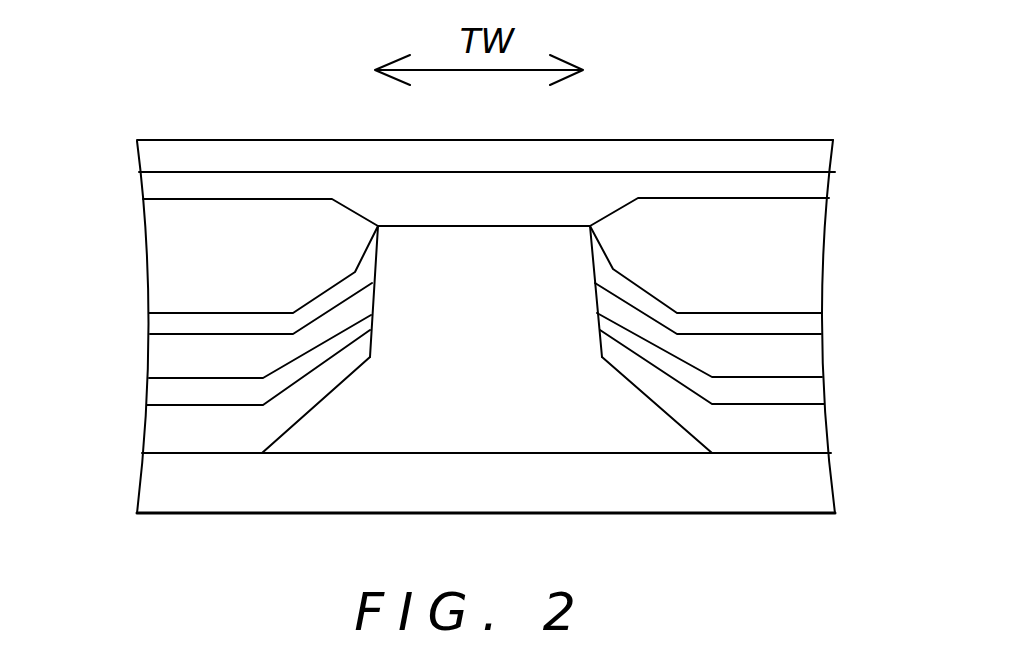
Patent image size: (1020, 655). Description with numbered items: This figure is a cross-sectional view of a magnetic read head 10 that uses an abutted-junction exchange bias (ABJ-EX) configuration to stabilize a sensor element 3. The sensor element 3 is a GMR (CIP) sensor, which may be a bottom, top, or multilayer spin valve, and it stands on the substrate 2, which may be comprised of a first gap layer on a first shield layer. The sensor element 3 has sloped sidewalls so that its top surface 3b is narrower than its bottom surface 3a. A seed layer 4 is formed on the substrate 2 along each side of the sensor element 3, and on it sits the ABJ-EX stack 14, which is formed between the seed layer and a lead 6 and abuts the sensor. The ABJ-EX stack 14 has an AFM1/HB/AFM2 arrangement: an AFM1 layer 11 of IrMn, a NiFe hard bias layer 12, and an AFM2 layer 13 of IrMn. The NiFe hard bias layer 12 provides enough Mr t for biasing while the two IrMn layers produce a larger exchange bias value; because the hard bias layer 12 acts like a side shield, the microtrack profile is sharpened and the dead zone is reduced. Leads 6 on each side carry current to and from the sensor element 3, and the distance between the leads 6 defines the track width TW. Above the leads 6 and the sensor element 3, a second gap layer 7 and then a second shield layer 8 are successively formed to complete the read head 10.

The read head 10 is at (115, 133).
The second shield layer 8 is at (815, 149).
The second gap layer 7 is at (812, 182).
The lead 6 is at (172, 238).
The top surface 3b is at (530, 227).
The sensor element 3 is at (473, 420).
The bottom surface 3a is at (380, 453).
The AFM2 layer 13 is at (173, 318).
The hard bias layer 12 is at (173, 356).
The AFM1 layer 11 is at (173, 389).
The ABJ-EX stack 14 is at (90, 298).
The seed layer 4 is at (162, 426).
The substrate 2 is at (818, 486).